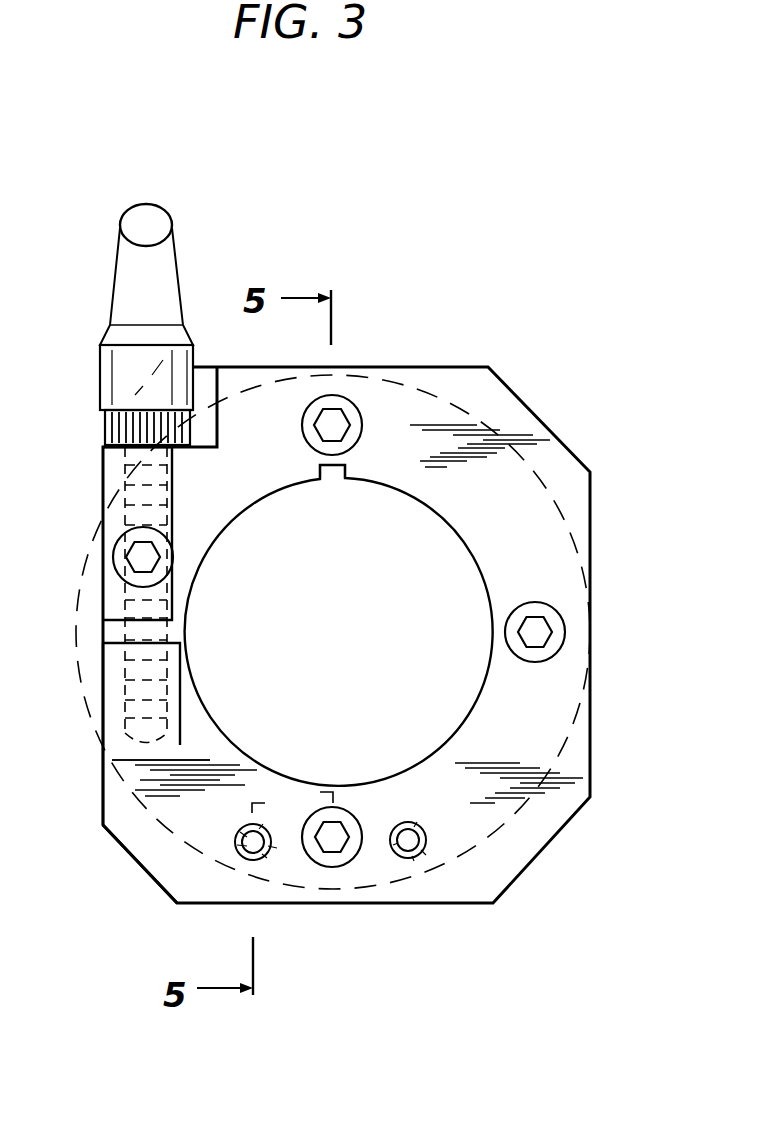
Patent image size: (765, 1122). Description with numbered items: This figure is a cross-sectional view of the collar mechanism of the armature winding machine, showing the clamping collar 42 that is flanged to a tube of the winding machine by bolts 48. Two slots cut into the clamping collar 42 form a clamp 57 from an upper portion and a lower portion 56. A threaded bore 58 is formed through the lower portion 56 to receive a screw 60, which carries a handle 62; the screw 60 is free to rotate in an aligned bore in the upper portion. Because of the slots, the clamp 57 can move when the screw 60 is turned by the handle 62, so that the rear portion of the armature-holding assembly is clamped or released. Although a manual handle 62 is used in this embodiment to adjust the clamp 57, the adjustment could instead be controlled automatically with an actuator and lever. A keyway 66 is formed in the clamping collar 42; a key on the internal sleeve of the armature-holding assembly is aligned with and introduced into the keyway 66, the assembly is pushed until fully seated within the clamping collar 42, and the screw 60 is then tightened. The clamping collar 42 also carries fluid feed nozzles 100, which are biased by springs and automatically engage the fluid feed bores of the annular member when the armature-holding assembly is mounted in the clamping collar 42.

The clamping collar 42 is at (584, 408).
The bolts 48 is at (348, 417).
The portion 56 is at (163, 818).
The clamp 57 is at (108, 468).
The threaded bore 58 is at (125, 725).
The screw 60 is at (118, 502).
The handle 62 is at (160, 257).
The keyway 66 is at (342, 467).
The fluid feed nozzles 100 is at (392, 853).